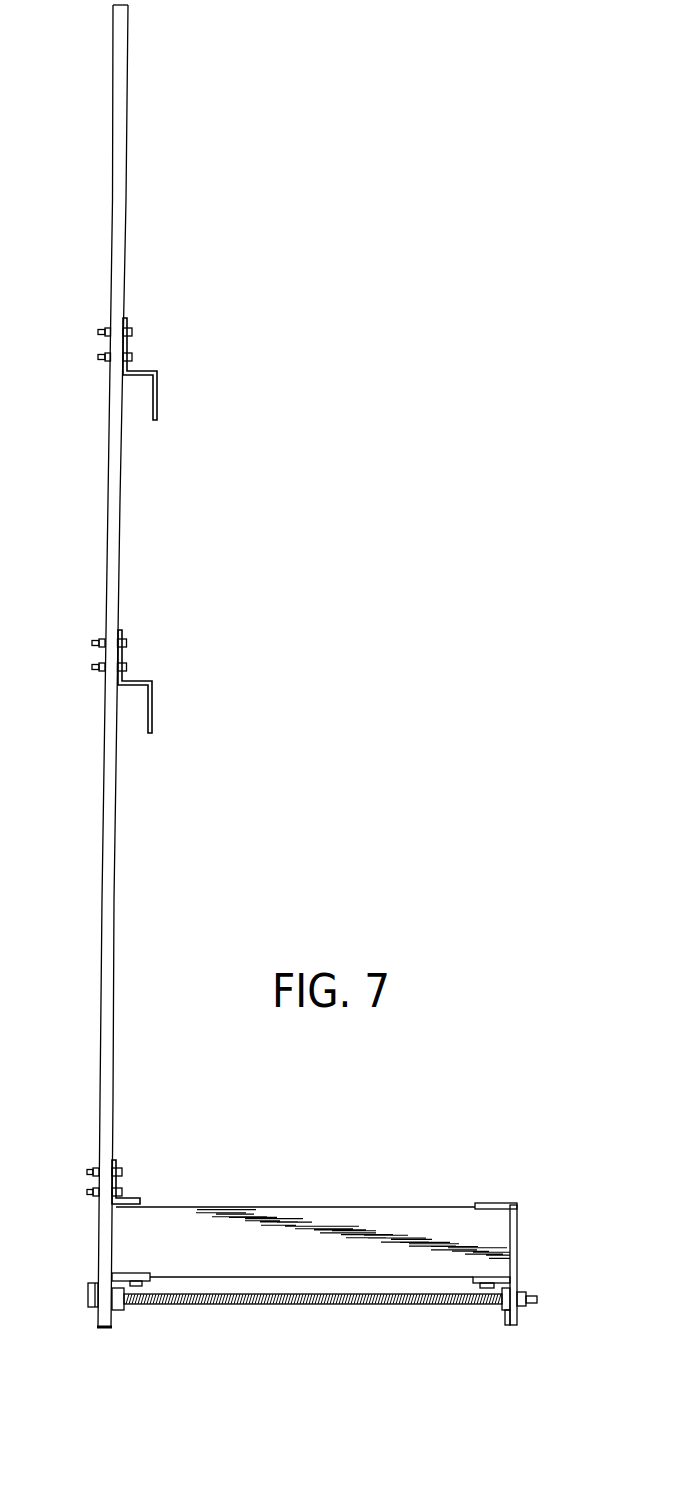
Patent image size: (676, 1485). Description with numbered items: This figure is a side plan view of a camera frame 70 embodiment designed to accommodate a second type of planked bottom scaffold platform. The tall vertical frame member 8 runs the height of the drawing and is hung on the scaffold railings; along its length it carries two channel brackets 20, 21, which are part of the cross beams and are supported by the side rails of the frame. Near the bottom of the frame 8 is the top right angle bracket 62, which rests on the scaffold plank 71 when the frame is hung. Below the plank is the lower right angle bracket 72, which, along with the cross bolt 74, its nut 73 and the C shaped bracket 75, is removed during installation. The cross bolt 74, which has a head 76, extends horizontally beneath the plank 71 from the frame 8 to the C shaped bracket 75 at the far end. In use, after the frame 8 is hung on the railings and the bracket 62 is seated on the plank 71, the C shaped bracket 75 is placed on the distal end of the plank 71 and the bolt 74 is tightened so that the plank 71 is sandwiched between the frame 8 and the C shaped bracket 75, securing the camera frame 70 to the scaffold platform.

The frame 70 is at (207, 201).
The vertical frame member 8 is at (120, 504).
The channel bracket 20 is at (157, 397).
The channel bracket 21 is at (152, 708).
The top right angle bracket 62 is at (122, 1183).
The plank 71 is at (352, 1220).
The lower right angle bracket 72 is at (123, 1273).
The nut 73 is at (88, 1298).
The cross bolt 74 is at (265, 1305).
The C shaped bracket 75 is at (518, 1280).
The head 76 is at (523, 1293).